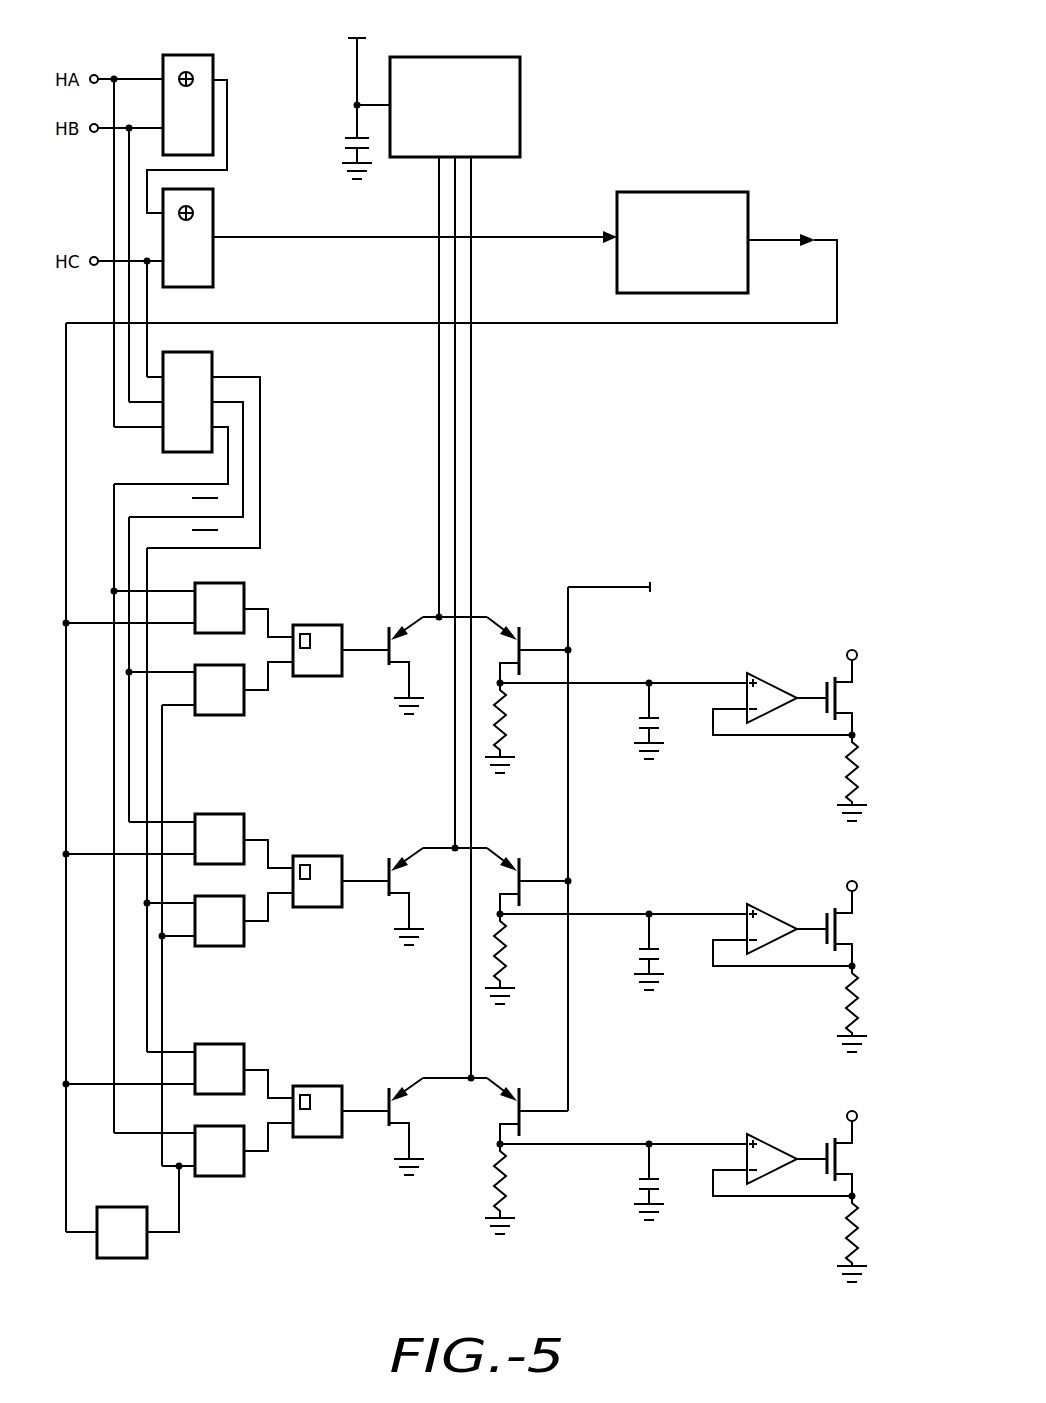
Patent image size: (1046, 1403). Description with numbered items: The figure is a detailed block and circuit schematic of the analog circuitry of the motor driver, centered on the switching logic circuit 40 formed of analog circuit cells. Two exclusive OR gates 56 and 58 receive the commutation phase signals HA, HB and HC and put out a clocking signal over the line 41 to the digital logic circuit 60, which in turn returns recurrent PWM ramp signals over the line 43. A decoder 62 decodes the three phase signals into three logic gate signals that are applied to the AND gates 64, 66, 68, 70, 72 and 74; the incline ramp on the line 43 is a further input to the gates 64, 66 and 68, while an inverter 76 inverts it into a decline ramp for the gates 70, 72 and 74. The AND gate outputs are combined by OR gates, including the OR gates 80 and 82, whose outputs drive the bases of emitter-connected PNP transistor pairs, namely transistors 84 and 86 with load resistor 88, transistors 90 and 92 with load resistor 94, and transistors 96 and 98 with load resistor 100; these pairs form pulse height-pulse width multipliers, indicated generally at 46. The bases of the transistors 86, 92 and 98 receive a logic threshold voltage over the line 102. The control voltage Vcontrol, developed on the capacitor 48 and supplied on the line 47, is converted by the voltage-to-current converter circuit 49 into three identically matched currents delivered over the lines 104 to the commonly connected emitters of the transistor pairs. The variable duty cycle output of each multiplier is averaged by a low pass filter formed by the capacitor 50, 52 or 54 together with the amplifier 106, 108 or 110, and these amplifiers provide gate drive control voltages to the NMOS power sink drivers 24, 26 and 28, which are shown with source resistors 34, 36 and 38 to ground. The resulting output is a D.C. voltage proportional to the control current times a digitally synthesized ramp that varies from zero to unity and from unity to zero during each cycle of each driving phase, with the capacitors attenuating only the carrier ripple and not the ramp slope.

The sink driver 24 is at (843, 689).
The sink driver 26 is at (843, 920).
The sink driver 28 is at (843, 1150).
The source resistor 34 is at (855, 776).
The source resistor 36 is at (855, 1007).
The source resistor 38 is at (855, 1237).
The switching logic circuit 40 is at (216, 1226).
The line 41 is at (491, 237).
The line 43 is at (837, 272).
The current steering circuit 46 is at (407, 1216).
The line 47 is at (357, 72).
The capacitor 48 is at (355, 138).
The voltage-to-current converter circuit 49 is at (522, 98).
The capacitor 50 is at (654, 728).
The capacitor 52 is at (654, 959).
The capacitor 54 is at (654, 1189).
The exclusive OR gate 56 is at (213, 58).
The exclusive OR gate 58 is at (205, 207).
The digital logic circuit 60 is at (682, 242).
The digital decoder 62 is at (212, 360).
The AND gate 64 is at (237, 1053).
The AND gate 66 is at (237, 941).
The AND gate 68 is at (237, 592).
The AND gate 70 is at (237, 1171).
The AND gate 72 is at (237, 823).
The AND gate 74 is at (237, 710).
The inverter 76 is at (128, 1258).
The OR gate 80 is at (320, 867).
The OR gate 82 is at (320, 636).
The PNP transistor 84 is at (386, 1127).
The PNP transistor 86 is at (522, 1092).
The load resistor 88 is at (501, 1195).
The PNP transistor 90 is at (386, 897).
The PNP transistor 92 is at (522, 862).
The load resistor 94 is at (501, 965).
The transistor 96 is at (386, 666).
The transistor 98 is at (522, 631).
The load resistor 100 is at (501, 734).
The line 102 is at (598, 588).
The current source lines 104 is at (471, 461).
The amplifier 106 is at (757, 681).
The amplifier 108 is at (757, 912).
The amplifier 110 is at (757, 1142).